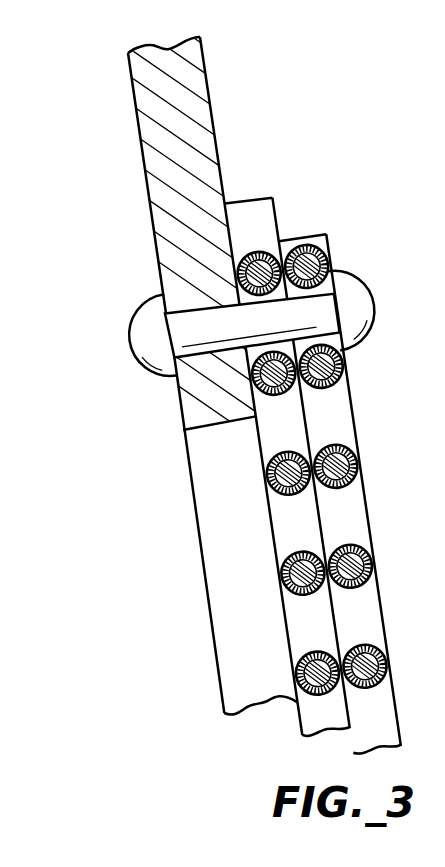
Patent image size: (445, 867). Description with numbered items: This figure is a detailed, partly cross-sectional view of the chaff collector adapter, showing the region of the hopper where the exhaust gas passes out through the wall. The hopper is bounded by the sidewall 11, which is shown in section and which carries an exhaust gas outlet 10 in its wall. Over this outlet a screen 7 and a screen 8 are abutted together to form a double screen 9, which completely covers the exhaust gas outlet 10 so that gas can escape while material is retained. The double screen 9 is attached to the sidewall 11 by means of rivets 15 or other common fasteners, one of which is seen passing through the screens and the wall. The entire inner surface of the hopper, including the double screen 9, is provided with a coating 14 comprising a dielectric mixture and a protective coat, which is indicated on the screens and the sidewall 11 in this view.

The screen 7 is at (283, 568).
The screen 8 is at (352, 547).
The double screen 9 is at (297, 476).
The exhaust gas outlet 10 is at (213, 463).
The sidewall 11 is at (197, 150).
The coating 14 is at (333, 444).
The rivets 15 is at (353, 290).